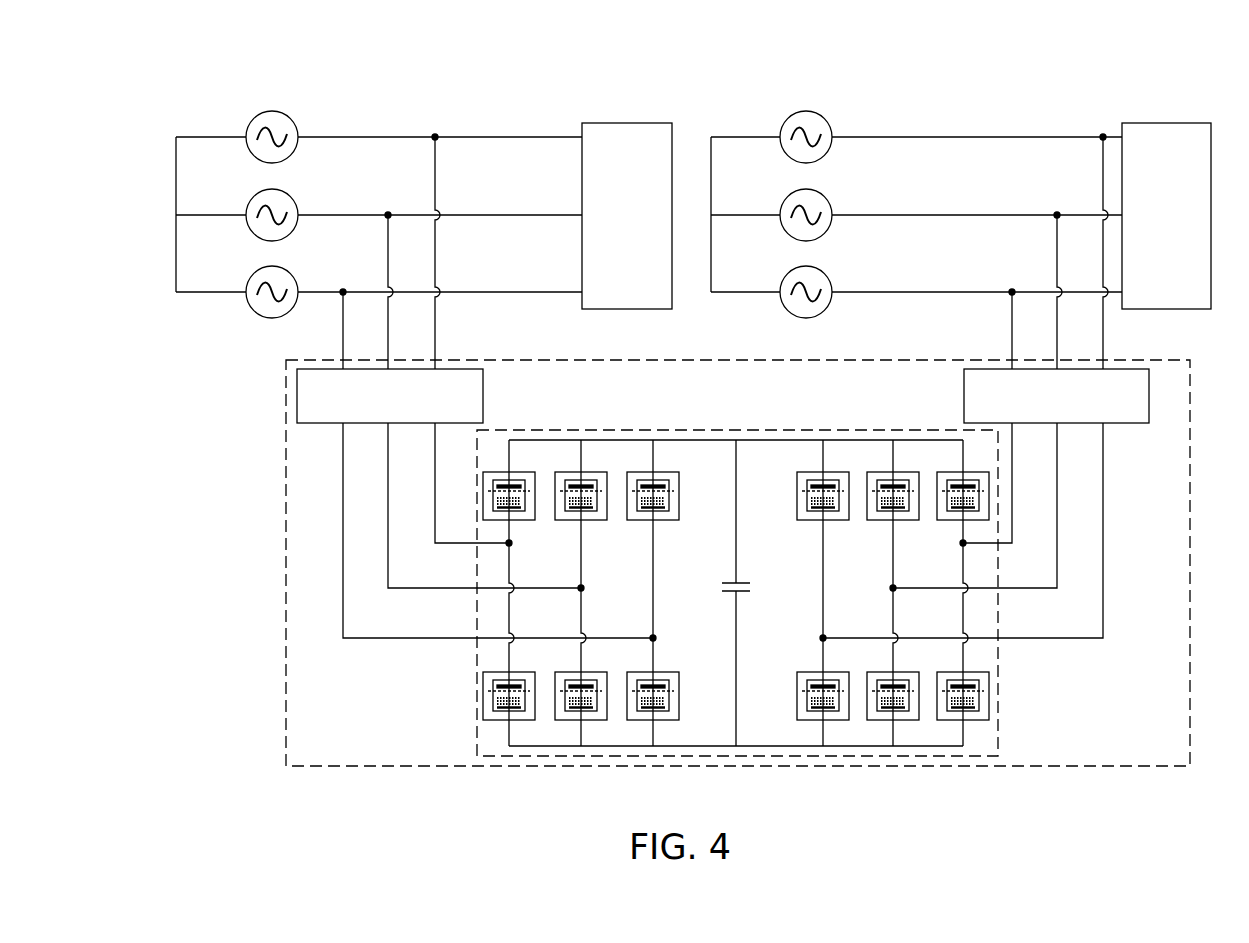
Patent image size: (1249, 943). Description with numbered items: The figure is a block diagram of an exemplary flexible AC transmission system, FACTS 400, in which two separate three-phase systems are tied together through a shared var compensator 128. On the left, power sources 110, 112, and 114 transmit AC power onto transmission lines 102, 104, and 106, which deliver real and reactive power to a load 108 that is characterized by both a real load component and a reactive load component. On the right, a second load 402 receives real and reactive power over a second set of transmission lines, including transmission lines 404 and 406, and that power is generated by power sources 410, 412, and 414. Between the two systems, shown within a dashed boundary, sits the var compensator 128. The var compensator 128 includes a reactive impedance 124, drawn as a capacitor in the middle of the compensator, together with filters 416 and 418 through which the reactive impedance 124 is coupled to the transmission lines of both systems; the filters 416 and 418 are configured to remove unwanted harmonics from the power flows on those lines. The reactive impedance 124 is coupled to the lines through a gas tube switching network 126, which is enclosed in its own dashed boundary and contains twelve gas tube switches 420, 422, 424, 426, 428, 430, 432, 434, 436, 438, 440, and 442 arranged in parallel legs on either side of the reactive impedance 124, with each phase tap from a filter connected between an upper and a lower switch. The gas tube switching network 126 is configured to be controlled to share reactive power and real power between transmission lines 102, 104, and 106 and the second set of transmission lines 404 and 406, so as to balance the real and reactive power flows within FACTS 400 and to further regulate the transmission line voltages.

The FACTS 400 is at (238, 64).
The transmission line 102 is at (368, 289).
The transmission line 104 is at (410, 211).
The transmission line 106 is at (493, 133).
The load 108 is at (628, 122).
The power source 110 is at (250, 271).
The power source 112 is at (250, 192).
The power source 114 is at (250, 114).
The reactive impedance 124 is at (749, 609).
The gas tube switching network 126 is at (476, 719).
The var compensator 128 is at (278, 592).
The second load 402 is at (975, 234).
The transmission line 404 is at (888, 289).
The transmission line 406 is at (955, 211).
The power source 410 is at (784, 271).
The power source 412 is at (784, 192).
The power source 414 is at (784, 114).
The filter 416 is at (288, 389).
The filter 418 is at (956, 372).
The gas tube switch 420 is at (534, 468).
The gas tube switch 422 is at (527, 721).
The gas tube switch 424 is at (600, 468).
The gas tube switch 426 is at (597, 721).
The gas tube switch 428 is at (673, 468).
The gas tube switch 430 is at (670, 721).
The gas tube switch 432 is at (804, 468).
The gas tube switch 434 is at (806, 721).
The gas tube switch 436 is at (877, 468).
The gas tube switch 438 is at (876, 721).
The gas tube switch 440 is at (949, 468).
The gas tube switch 442 is at (948, 721).